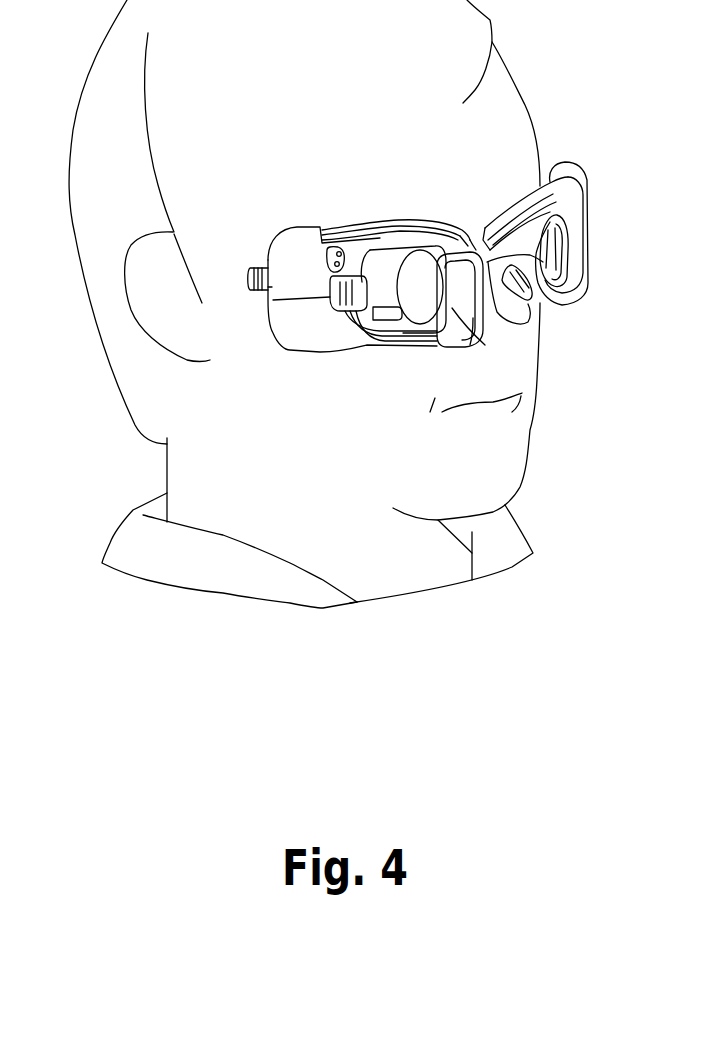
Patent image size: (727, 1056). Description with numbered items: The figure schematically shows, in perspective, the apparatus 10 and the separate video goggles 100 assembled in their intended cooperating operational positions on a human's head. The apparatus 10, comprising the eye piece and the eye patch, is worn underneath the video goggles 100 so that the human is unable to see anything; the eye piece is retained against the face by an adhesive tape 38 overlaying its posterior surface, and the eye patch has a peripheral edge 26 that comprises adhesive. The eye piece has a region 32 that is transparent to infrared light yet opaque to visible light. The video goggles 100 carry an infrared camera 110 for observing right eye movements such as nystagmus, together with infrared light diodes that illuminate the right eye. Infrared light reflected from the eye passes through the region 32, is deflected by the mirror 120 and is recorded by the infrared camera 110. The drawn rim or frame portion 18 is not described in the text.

The apparatus 10 is at (502, 217).
The lens rim 18 is at (572, 255).
The peripheral edge 26 is at (522, 192).
The region 32 is at (431, 287).
The adhesive tape 38 is at (436, 216).
The video goggles 100 is at (320, 352).
The infrared camera 110 is at (377, 335).
The mirror 120 is at (463, 388).